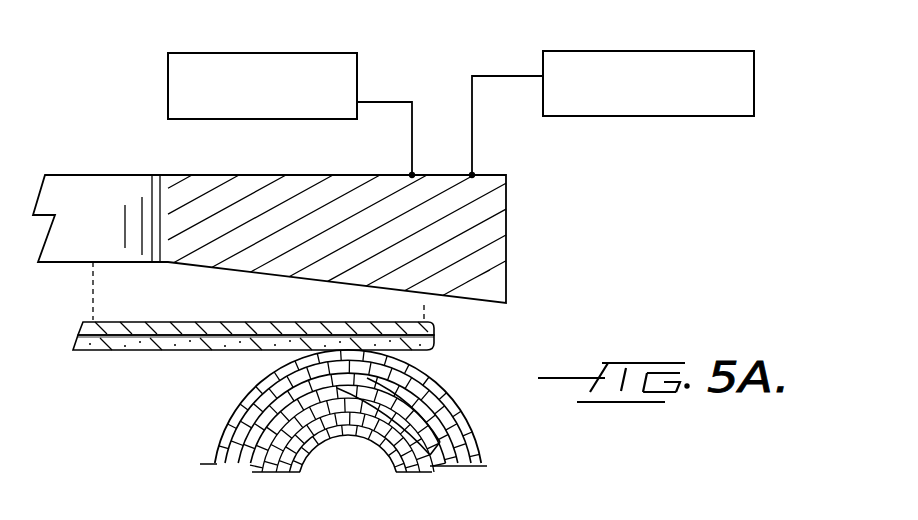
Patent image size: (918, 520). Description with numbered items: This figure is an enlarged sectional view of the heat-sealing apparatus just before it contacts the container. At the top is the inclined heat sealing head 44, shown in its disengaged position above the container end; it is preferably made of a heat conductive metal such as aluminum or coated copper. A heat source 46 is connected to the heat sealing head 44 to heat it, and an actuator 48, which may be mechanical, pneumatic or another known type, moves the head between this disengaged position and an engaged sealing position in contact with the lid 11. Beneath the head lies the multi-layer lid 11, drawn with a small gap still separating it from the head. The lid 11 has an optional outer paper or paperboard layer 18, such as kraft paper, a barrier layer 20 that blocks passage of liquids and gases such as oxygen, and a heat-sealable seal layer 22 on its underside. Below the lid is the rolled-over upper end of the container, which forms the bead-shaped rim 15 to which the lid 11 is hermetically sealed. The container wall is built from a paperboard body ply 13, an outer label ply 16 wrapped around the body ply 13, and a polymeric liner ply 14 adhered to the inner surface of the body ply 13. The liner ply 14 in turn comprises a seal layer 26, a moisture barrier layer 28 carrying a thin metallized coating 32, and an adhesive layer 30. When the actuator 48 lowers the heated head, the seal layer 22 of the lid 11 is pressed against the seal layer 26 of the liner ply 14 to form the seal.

The heat source 46 is at (358, 74).
The actuator 48 is at (754, 74).
The heat sealing head 44 is at (507, 229).
The paper or paperboard layer 18 is at (90, 320).
The lid 11 is at (280, 360).
The barrier layer 20 is at (118, 333).
The seal layer 22 is at (153, 352).
The rim 15 is at (243, 368).
The seal layer 26 is at (433, 372).
The moisture barrier layer 28 is at (447, 392).
The metallized coating 32 is at (467, 422).
The adhesive layer 30 is at (480, 440).
The outer label ply 16 is at (302, 473).
The body ply 13 is at (420, 457).
The liner ply 14 is at (437, 473).